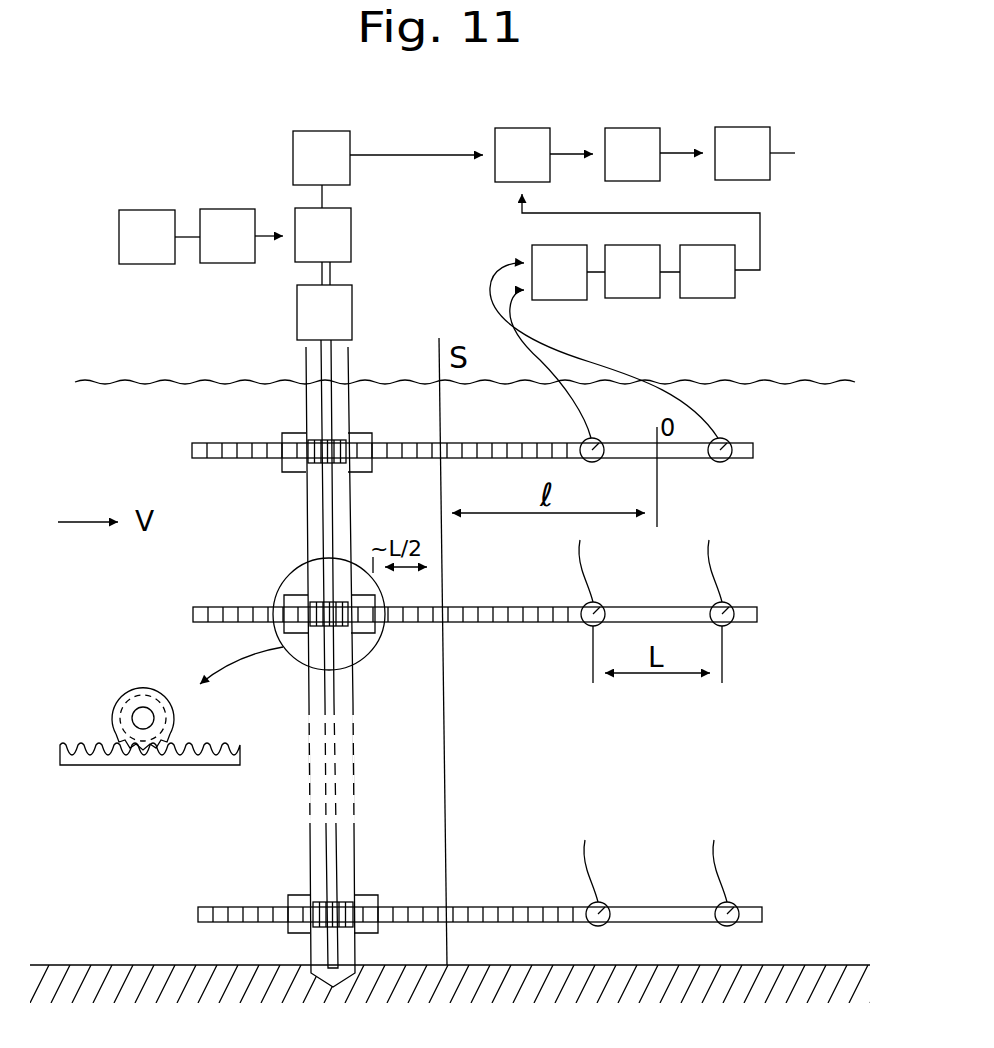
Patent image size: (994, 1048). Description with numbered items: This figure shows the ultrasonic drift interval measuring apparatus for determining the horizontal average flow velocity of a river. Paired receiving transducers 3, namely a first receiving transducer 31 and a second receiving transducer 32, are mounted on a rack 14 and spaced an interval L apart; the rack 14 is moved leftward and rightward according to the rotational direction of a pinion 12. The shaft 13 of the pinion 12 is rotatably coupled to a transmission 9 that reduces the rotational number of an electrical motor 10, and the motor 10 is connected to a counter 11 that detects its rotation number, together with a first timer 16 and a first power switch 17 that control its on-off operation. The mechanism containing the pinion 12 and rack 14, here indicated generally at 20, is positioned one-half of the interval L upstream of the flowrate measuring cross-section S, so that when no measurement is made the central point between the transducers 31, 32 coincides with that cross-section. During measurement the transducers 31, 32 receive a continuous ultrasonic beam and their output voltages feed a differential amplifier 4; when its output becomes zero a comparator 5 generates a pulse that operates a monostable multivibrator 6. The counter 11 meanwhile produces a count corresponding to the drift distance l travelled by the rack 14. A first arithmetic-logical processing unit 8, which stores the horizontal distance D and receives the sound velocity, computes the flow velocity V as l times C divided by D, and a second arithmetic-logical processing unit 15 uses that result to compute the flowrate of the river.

The receiving transducers 3 is at (659, 594).
The first receiving transducer 31 is at (598, 441).
The second receiving transducer 32 is at (742, 426).
The differential amplifier 4 is at (559, 272).
The comparator 5 is at (632, 271).
The monostable multivibrator 6 is at (707, 271).
The first arithmetic-logical processing unit 8 is at (632, 154).
The transmission 9 is at (423, 234).
The electrical motor 10 is at (323, 235).
The counter 11 is at (321, 158).
The pinion 12 is at (323, 448).
The shaft 13 is at (327, 363).
The rack 14 is at (407, 452).
The second arithmetic-logical processing unit 15 is at (742, 153).
The first timer 16 is at (147, 237).
The first power switch 17 is at (227, 236).
The drive unit 20 is at (305, 543).